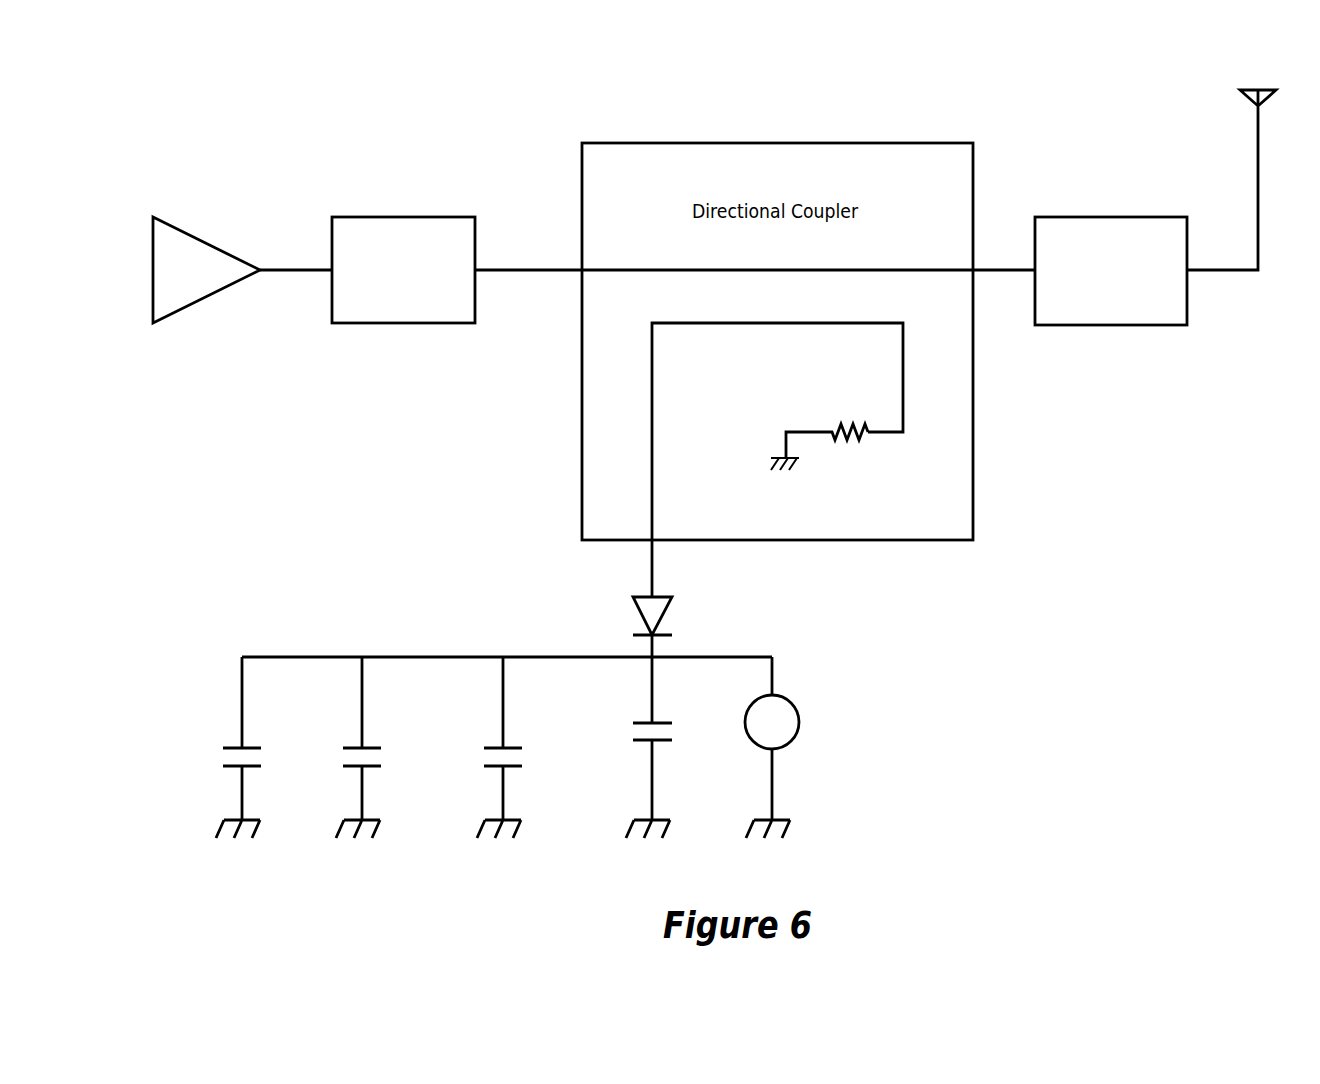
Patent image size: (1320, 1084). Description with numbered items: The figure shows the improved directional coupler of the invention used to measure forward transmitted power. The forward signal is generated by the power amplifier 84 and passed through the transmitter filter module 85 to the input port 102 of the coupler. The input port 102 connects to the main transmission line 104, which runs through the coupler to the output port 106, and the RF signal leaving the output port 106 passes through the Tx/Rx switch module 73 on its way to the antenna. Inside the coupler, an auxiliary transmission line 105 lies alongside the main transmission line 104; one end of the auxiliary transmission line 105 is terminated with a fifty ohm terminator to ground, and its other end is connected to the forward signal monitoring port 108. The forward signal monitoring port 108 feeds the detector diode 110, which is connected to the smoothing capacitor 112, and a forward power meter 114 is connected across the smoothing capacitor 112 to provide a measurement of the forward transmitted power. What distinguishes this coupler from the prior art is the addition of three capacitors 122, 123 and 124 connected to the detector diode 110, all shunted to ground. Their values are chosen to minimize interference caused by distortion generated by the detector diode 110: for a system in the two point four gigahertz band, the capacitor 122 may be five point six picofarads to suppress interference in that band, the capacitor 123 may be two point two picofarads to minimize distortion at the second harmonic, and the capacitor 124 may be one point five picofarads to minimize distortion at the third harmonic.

The power amplifier 84 is at (198, 305).
The transmitter filter module 85 is at (393, 325).
The input port 102 is at (570, 272).
The main transmission line 104 is at (703, 268).
The auxiliary transmission line 105 is at (757, 322).
The output port 106 is at (978, 270).
The Tx/Rx switch module 73 is at (1111, 271).
The forward signal monitoring port 108 is at (648, 542).
The detector diode 110 is at (640, 618).
The smoothing capacitor 112 is at (693, 704).
The forward power meter 114 is at (803, 722).
The capacitor 122 is at (519, 745).
The capacitor 123 is at (376, 745).
The capacitor 124 is at (256, 745).